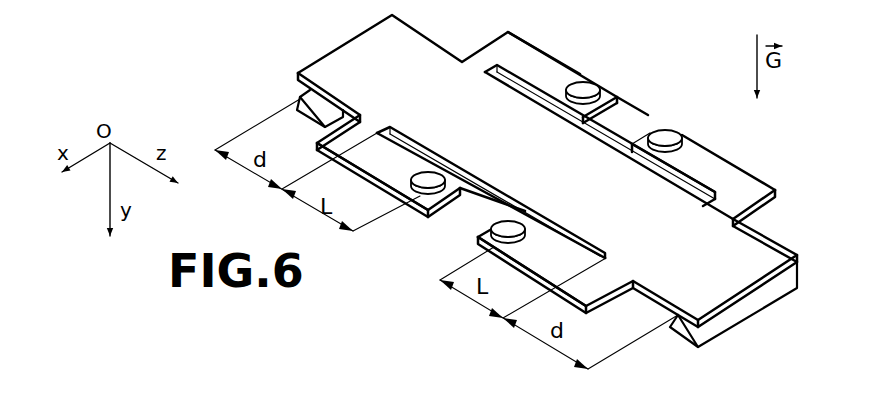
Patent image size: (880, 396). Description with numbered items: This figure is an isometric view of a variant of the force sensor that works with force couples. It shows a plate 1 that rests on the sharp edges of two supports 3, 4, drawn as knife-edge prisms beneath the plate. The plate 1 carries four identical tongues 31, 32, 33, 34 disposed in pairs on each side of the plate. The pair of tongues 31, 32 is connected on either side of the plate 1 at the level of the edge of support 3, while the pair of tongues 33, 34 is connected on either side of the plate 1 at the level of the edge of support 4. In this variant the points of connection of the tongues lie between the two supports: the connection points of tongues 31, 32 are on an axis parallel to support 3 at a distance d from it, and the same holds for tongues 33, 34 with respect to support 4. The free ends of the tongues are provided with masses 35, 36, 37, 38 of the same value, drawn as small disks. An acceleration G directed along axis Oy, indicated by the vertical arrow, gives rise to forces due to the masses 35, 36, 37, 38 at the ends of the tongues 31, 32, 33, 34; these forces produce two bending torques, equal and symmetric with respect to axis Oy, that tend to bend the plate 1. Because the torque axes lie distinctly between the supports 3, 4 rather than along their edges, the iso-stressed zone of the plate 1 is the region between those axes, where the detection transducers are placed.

The plate 1 is at (338, 62).
The support 3 is at (307, 110).
The support 4 is at (683, 340).
The tongue 31 is at (527, 63).
The tongue 32 is at (387, 167).
The tongue 33 is at (725, 177).
The tongue 34 is at (560, 267).
The mass 35 is at (587, 90).
The mass 36 is at (433, 177).
The mass 37 is at (670, 138).
The mass 38 is at (510, 230).